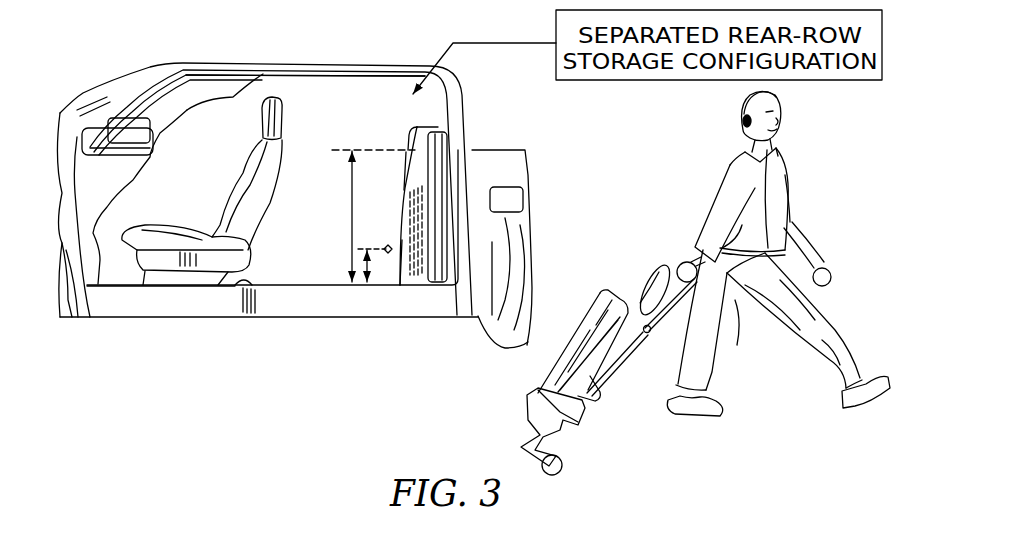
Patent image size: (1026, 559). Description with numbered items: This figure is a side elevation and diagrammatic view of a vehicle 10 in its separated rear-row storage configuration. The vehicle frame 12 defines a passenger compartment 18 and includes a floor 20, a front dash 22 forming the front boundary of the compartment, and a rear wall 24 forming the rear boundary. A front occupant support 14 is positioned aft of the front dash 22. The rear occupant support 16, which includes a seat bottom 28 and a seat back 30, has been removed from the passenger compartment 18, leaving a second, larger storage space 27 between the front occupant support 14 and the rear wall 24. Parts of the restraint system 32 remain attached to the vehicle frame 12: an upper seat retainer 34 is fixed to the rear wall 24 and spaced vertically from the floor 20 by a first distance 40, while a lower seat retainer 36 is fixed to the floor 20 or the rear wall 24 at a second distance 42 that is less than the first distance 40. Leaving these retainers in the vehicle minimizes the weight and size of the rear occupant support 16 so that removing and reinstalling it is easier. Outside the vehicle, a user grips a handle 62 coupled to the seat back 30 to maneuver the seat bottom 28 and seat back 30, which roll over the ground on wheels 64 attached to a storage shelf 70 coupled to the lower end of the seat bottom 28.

The vehicle 10 is at (124, 35).
The vehicle frame 12 is at (113, 303).
The front occupant support 14 is at (271, 90).
The rear occupant support 16 is at (612, 287).
The passenger compartment 18 is at (314, 88).
The floor 20 is at (240, 282).
The front dash 22 is at (121, 93).
The rear wall 24 is at (440, 218).
The second, larger storage space 27 is at (279, 268).
The seat bottom 28 is at (549, 354).
The seat back 30 is at (617, 377).
The restraint system 32 is at (415, 139).
The upper seat retainer 34 is at (410, 153).
The lower seat retainer 36 is at (404, 256).
The first distance 40 is at (351, 247).
The second distance 42 is at (372, 266).
The handle 62 is at (670, 321).
The wheels 64 is at (571, 458).
The storage shelf 70 is at (530, 454).